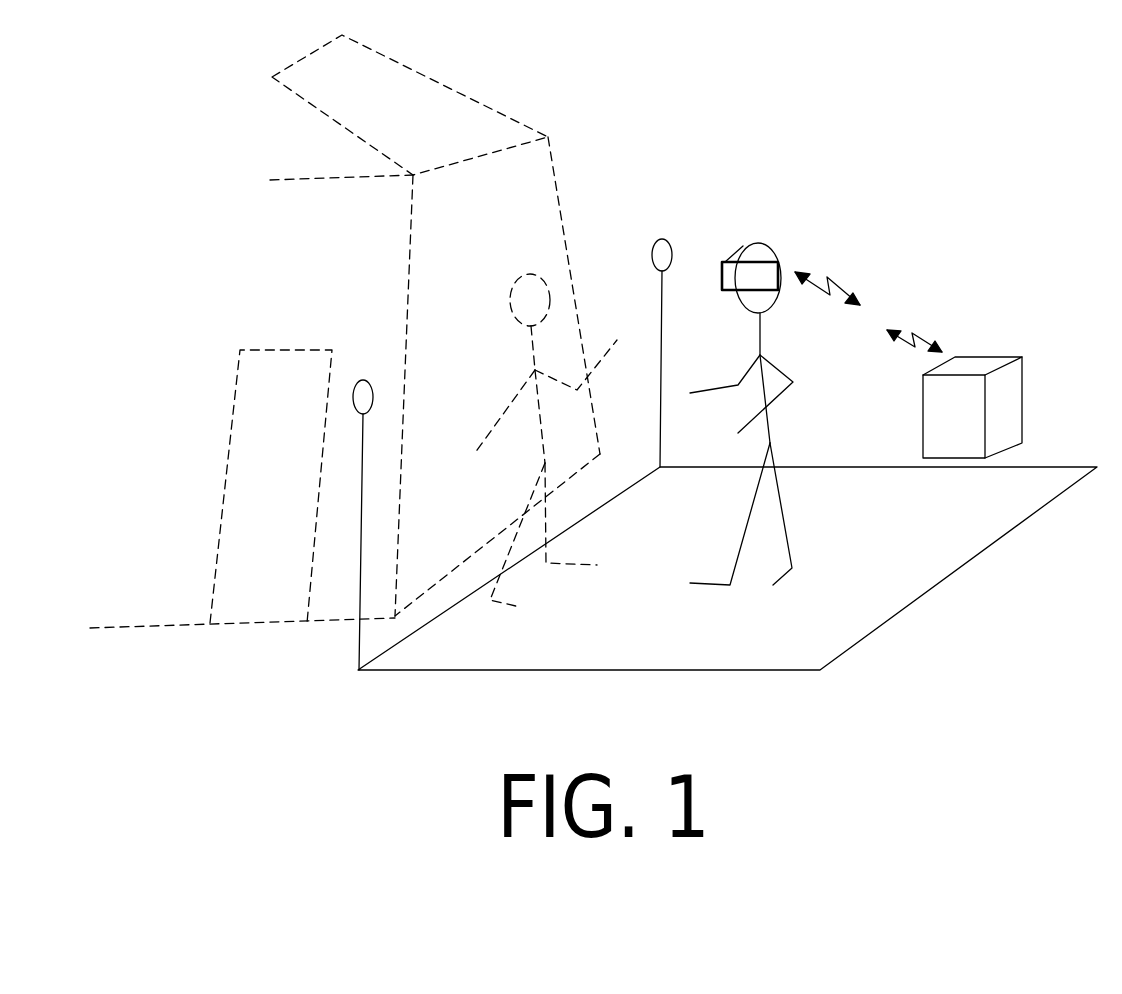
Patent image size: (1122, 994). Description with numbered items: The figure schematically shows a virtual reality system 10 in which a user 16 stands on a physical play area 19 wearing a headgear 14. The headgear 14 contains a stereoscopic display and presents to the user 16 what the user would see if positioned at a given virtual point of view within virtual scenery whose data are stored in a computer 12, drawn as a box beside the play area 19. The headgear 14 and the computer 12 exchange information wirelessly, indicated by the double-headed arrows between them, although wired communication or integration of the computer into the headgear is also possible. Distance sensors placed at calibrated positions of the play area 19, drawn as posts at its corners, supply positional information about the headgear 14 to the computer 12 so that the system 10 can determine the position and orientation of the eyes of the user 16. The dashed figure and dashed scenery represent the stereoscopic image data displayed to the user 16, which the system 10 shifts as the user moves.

The virtual reality system 10 is at (270, 131).
The computer 12 is at (1023, 393).
The headgear 14 is at (727, 258).
The user 16 is at (778, 358).
The play area 19 is at (832, 627).